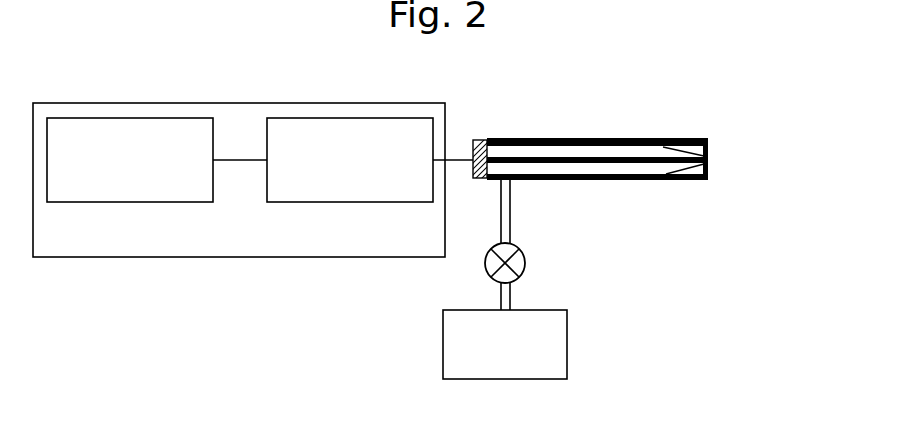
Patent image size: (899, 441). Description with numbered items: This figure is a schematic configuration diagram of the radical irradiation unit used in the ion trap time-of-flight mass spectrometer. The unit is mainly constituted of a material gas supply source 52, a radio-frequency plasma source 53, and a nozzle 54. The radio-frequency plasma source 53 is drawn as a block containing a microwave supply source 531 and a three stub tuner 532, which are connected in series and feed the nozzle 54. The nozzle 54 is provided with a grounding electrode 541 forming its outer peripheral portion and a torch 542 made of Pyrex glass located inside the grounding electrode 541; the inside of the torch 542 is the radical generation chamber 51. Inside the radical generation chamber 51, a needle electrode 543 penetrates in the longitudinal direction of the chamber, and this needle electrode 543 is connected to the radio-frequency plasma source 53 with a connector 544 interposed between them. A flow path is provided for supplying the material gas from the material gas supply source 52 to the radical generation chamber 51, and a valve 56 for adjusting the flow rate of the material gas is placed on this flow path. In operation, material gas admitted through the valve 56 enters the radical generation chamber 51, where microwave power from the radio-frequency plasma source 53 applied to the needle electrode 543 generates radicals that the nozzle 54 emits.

The radical generation chamber 51 is at (624, 166).
The material gas supply source 52 is at (518, 380).
The radio-frequency plasma source 53 is at (322, 258).
The microwave supply source 531 is at (143, 203).
The three stub tuner 532 is at (365, 203).
The nozzle 54 is at (597, 150).
The grounding electrode 541 is at (555, 139).
The torch 542 is at (633, 139).
The needle electrode 543 is at (553, 163).
The connector 544 is at (480, 141).
The valve 56 is at (527, 266).